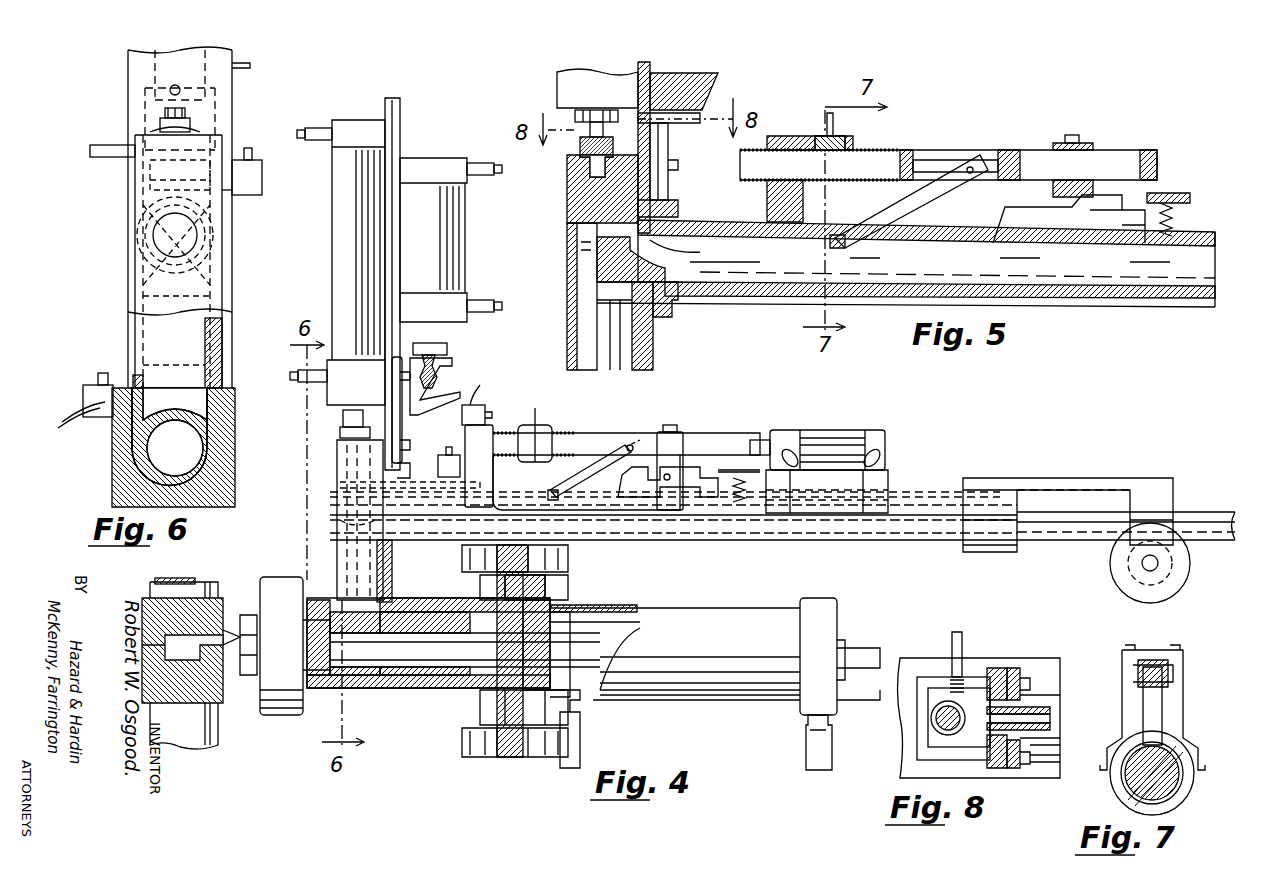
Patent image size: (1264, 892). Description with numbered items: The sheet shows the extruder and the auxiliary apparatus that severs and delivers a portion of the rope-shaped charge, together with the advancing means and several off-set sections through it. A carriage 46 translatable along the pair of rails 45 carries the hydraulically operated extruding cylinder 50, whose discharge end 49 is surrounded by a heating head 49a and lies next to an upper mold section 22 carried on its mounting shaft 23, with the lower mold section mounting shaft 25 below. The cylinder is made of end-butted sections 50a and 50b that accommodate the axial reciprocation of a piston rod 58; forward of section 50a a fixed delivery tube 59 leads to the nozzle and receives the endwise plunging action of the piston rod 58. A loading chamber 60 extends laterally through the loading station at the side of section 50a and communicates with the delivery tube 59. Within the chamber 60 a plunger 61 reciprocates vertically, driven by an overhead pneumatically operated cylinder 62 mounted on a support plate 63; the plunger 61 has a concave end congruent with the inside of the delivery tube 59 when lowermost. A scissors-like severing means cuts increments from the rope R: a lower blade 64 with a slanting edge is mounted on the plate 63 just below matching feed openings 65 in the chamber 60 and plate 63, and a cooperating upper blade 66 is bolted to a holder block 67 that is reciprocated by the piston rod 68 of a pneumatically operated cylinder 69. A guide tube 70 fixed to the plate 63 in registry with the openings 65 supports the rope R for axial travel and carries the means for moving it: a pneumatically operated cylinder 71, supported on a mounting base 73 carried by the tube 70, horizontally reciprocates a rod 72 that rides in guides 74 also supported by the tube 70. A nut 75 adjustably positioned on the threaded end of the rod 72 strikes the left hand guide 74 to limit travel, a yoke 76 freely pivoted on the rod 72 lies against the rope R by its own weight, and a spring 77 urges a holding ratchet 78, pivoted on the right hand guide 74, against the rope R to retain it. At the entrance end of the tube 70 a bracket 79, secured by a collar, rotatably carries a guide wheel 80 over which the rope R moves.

In FIG. 4, the upper mold section 22 is at (142, 604).
In FIG. 4, the upper mold section mounting shaft 23 is at (215, 588).
In FIG. 4, the lower mold section mounting shaft 25 is at (218, 750).
In FIG. 4, the rails 45 is at (550, 560).
In FIG. 4, the carriage 46 is at (580, 604).
In FIG. 4, the discharge end 49 is at (245, 677).
In FIG. 4, the heating head 49a is at (282, 718).
In FIG. 4, the extruding cylinder 50 is at (672, 615).
In FIG. 6, the cylinder section 50a is at (120, 488).
In FIG. 4, the cylinder section 50a is at (368, 690).
In FIG. 8, the cylinder section 50a is at (905, 756).
In FIG. 4, the cylinder section 50b is at (690, 702).
In FIG. 6, the piston rod 58 is at (185, 450).
In FIG. 4, the piston rod 58 is at (540, 651).
In FIG. 6, the delivery tube 59 is at (207, 432).
In FIG. 4, the delivery tube 59 is at (400, 604).
In FIG. 6, the loading chamber 60 is at (232, 236).
In FIG. 4, the loading chamber 60 is at (337, 540).
In FIG. 5, the loading chamber 60 is at (570, 182).
In FIG. 8, the loading chamber 60 is at (917, 740).
In FIG. 4, the plunger 61 is at (330, 494).
In FIG. 5, the plunger 61 is at (580, 210).
In FIG. 8, the plunger 61 is at (958, 692).
In FIG. 4, the pneumatically operated cylinder 62 is at (340, 288).
In FIG. 5, the pneumatically operated cylinder 62 is at (560, 85).
In FIG. 6, the support plate 63 is at (236, 105).
In FIG. 4, the support plate 63 is at (400, 100).
In FIG. 5, the support plate 63 is at (644, 147).
In FIG. 8, the support plate 63 is at (1000, 770).
In FIG. 6, the lower blade 64 is at (140, 290).
In FIG. 5, the lower blade 64 is at (592, 302).
In FIG. 5, the feed openings 65 is at (690, 246).
In FIG. 6, the upper blade 66 is at (145, 108).
In FIG. 5, the upper blade 66 is at (670, 150).
In FIG. 8, the upper blade 66 is at (1000, 662).
In FIG. 4, the holder block 67 is at (445, 385).
In FIG. 5, the holder block 67 is at (720, 82).
In FIG. 8, the holder block 67 is at (1042, 712).
In FIG. 4, the piston rod 68 is at (448, 347).
In FIG. 4, the pneumatically operated cylinder 69 is at (458, 245).
In FIG. 4, the guide tube 70 is at (805, 543).
In FIG. 5, the guide tube 70 is at (730, 307).
In FIG. 8, the guide tube 70 is at (1040, 692).
In FIG. 7, the guide tube 70 is at (1190, 788).
In FIG. 4, the pneumatically operated cylinder 71 is at (835, 432).
In FIG. 4, the rod 72 is at (590, 435).
In FIG. 5, the rod 72 is at (1010, 150).
In FIG. 7, the rod 72 is at (1160, 662).
In FIG. 4, the mounting base 73 is at (890, 485).
In FIG. 4, the guides 74 is at (482, 430).
In FIG. 5, the guides 74 is at (778, 136).
In FIG. 7, the guides 74 is at (1185, 725).
In FIG. 4, the nut 75 is at (540, 425).
In FIG. 5, the nut 75 is at (838, 128).
In FIG. 4, the yoke 76 is at (560, 478).
In FIG. 5, the yoke 76 is at (912, 200).
In FIG. 7, the yoke 76 is at (1163, 708).
In FIG. 4, the spring 77 is at (736, 490).
In FIG. 5, the spring 77 is at (1188, 216).
In FIG. 4, the holding ratchet 78 is at (722, 468).
In FIG. 5, the holding ratchet 78 is at (1125, 245).
In FIG. 4, the bracket 79 is at (1085, 480).
In FIG. 4, the guide wheel 80 is at (1112, 577).
In FIG. 4, the rope R is at (1204, 518).
In FIG. 5, the rope R is at (965, 267).
In FIG. 7, the rope R is at (1122, 788).